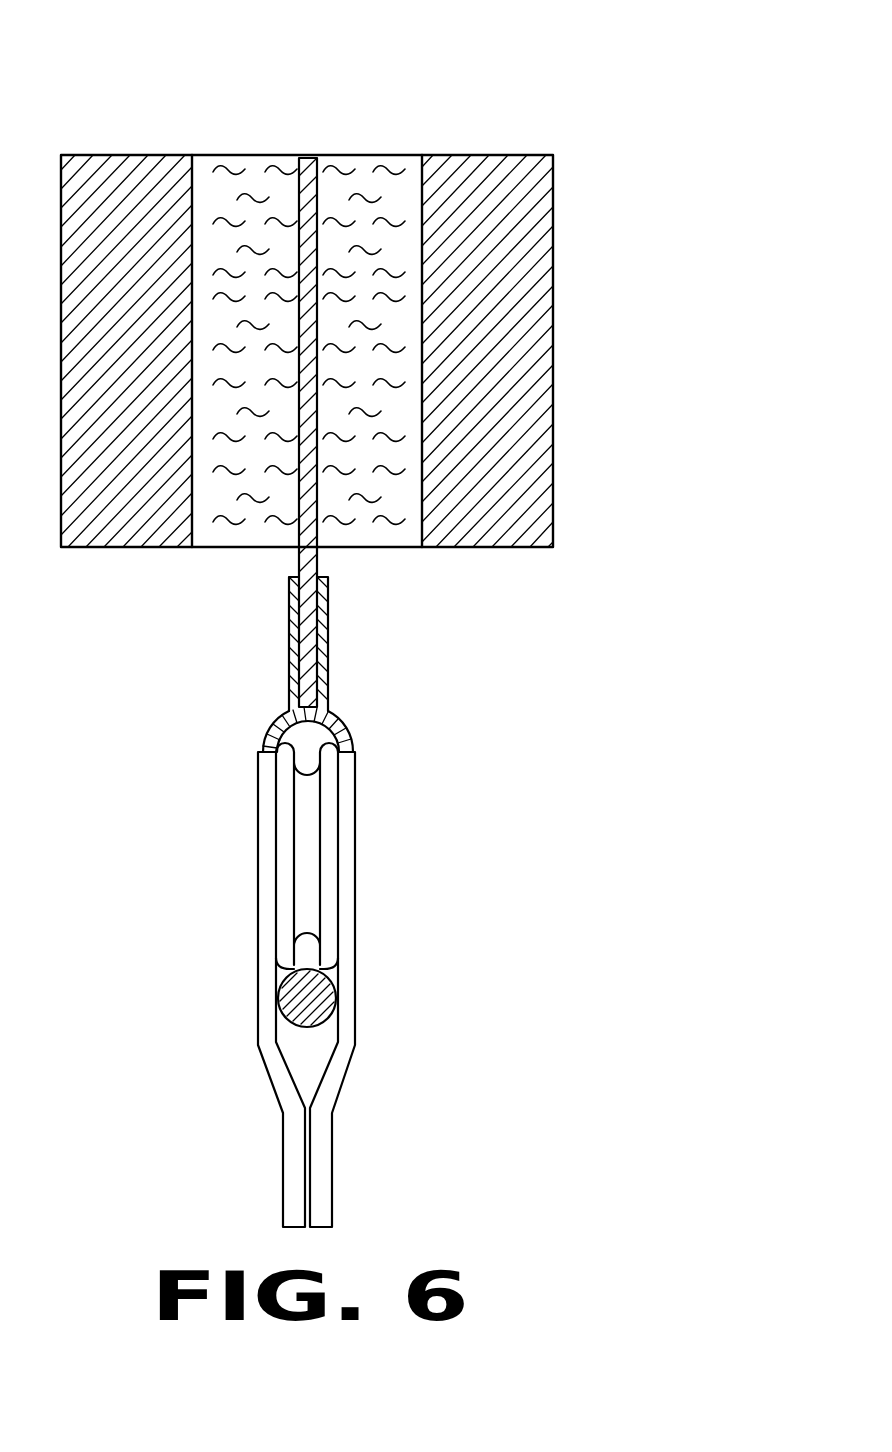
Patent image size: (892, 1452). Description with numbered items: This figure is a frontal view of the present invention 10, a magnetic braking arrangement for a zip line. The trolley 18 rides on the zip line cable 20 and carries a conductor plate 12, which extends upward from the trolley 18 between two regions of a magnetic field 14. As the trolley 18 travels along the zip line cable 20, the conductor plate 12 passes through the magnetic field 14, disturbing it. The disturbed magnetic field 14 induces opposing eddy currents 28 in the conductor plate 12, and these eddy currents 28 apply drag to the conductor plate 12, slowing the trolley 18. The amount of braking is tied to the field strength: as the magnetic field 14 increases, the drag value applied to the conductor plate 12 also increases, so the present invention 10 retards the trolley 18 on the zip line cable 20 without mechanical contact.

The present invention 10 is at (634, 101).
The conductor plate 12 is at (308, 448).
The magnetic field 14 is at (367, 340).
The trolley 18 is at (347, 818).
The zip line cable 20 is at (320, 990).
The opposing eddy currents 28 is at (343, 173).